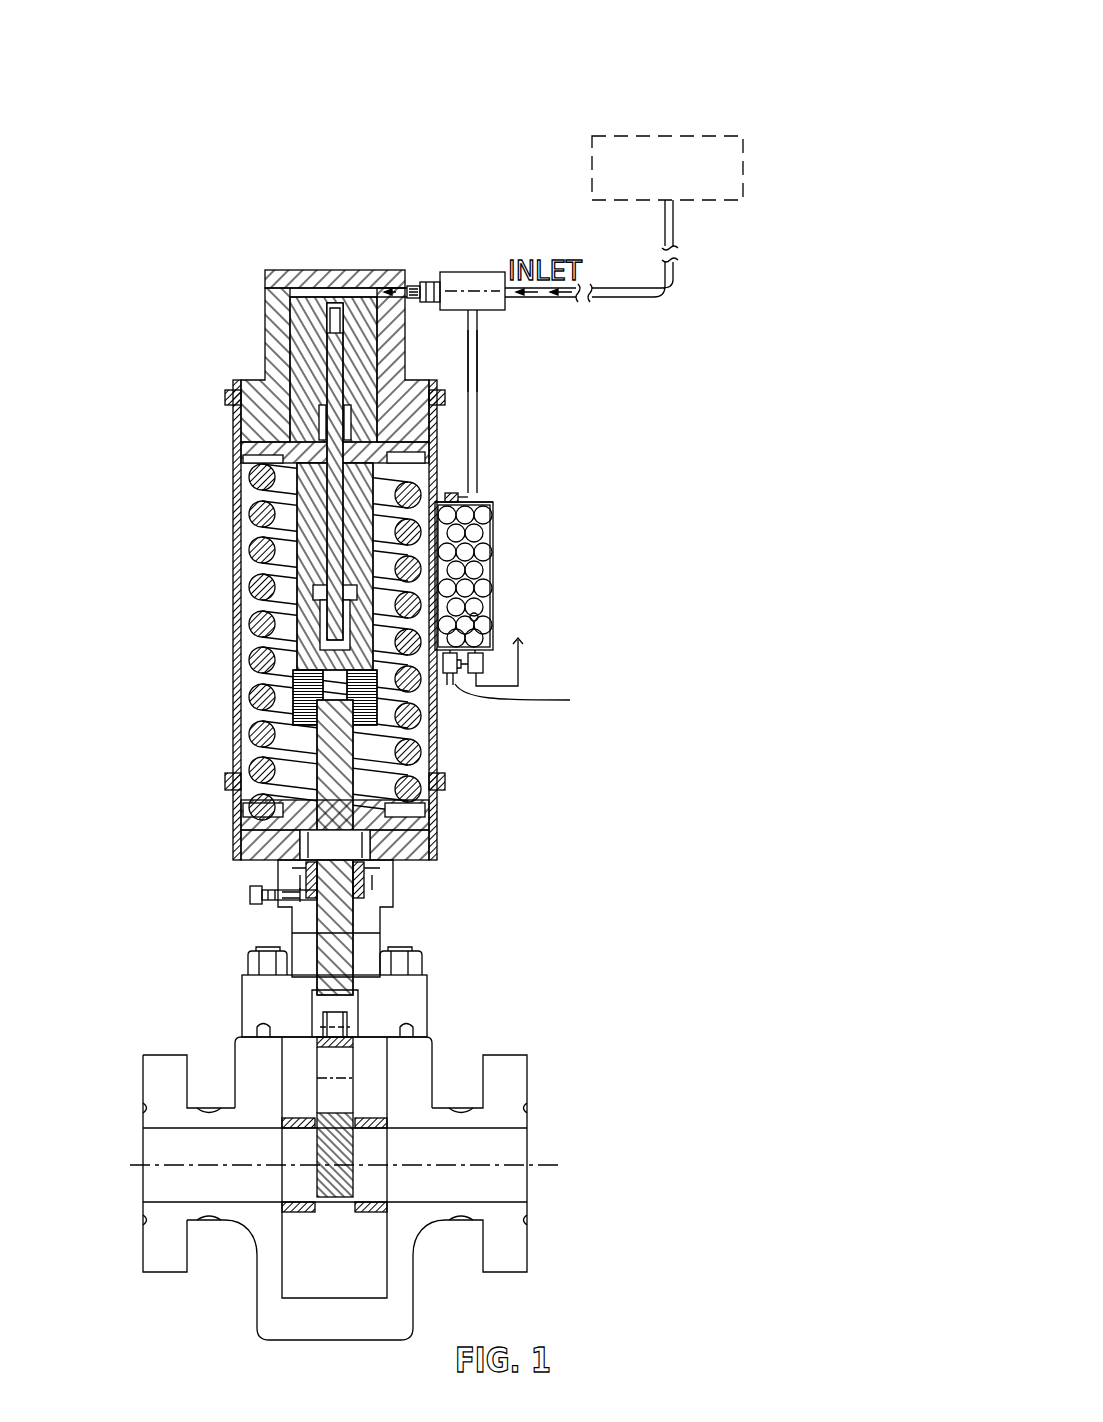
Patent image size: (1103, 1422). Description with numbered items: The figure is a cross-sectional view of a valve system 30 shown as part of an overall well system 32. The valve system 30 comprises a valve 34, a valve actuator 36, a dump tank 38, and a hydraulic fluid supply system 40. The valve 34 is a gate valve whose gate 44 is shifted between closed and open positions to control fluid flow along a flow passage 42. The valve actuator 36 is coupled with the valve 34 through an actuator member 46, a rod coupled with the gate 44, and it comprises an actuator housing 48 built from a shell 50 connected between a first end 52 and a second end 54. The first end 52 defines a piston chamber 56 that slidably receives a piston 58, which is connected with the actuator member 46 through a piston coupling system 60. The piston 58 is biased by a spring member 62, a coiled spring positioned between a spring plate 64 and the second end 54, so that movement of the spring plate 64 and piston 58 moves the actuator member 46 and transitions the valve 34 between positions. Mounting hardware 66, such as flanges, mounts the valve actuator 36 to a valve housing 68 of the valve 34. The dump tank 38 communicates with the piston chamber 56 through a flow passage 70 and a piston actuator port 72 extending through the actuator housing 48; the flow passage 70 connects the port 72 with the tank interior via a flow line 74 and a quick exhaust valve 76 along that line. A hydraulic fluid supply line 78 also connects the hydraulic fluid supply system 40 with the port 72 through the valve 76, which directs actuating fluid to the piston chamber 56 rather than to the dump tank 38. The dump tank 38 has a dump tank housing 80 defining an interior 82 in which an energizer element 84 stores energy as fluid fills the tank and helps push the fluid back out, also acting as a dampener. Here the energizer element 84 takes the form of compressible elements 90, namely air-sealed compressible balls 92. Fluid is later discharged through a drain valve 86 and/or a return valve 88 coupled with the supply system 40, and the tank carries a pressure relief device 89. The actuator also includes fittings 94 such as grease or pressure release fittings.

The valve system 30 is at (523, 760).
The well system 32 is at (811, 50).
The valve 34 is at (326, 1170).
The valve actuator 36 is at (277, 620).
The dump tank 38 is at (546, 578).
The hydraulic fluid supply system 40 is at (671, 132).
The flow passage 42 is at (493, 1200).
The gate 44 is at (315, 1147).
The actuator member 46 is at (292, 932).
The actuator housing 48 is at (232, 644).
The shell 50 is at (233, 589).
The first end 52 is at (263, 348).
The second end 54 is at (236, 822).
The piston chamber 56 is at (303, 318).
The piston 58 is at (313, 306).
The piston coupling system 60 is at (295, 565).
The spring member 62 is at (422, 713).
The spring plate 64 is at (434, 448).
The mounting hardware 66 is at (242, 1000).
The valve housing 68 is at (235, 1053).
The flow passage 70 is at (472, 392).
The piston actuator port 72 is at (396, 284).
The flow line 74 is at (479, 331).
The valve 76 is at (468, 272).
The hydraulic fluid supply line 78 is at (566, 300).
The dump tank housing 80 is at (546, 576).
The interior 82 is at (493, 565).
The energizer element 84 is at (483, 505).
The drain valve 86 is at (530, 698).
The return valve 88 is at (507, 648).
The pressure relief device 89 is at (452, 493).
The compressible elements 90 is at (478, 513).
The compressible balls 92 is at (472, 616).
The fittings 94 is at (250, 893).